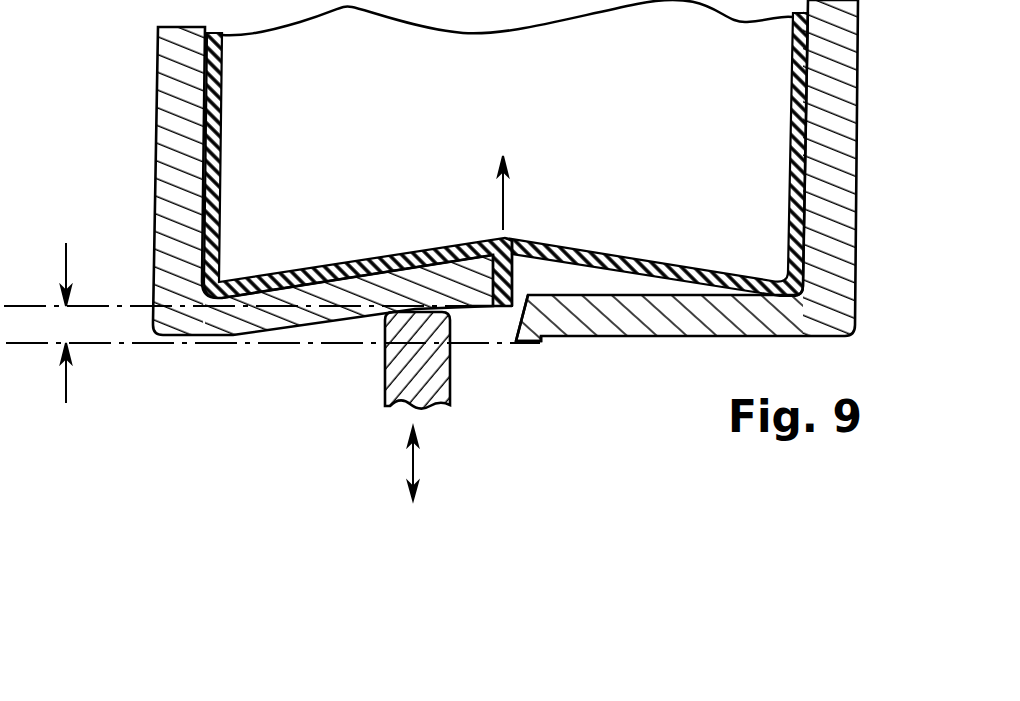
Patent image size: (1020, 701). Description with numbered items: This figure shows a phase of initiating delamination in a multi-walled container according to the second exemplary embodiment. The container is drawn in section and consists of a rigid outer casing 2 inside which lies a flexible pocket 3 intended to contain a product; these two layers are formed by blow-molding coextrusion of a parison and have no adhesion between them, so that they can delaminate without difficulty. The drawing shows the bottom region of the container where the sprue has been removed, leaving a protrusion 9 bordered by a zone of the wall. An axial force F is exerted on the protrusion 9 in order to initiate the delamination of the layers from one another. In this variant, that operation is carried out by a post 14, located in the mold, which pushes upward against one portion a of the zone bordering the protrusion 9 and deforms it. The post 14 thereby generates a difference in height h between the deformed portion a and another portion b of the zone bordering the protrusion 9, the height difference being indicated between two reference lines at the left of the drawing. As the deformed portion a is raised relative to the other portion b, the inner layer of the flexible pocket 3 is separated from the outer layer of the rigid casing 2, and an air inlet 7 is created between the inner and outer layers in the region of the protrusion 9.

The rigid outer casing 2 is at (836, 146).
The flexible pocket 3 is at (800, 138).
The air inlet 7 is at (519, 302).
The protrusion 9 is at (483, 306).
The post 14 is at (403, 374).
The portion of the zone bordering the protrusion a is at (452, 277).
The other portion of the zone bordering the protrusion b is at (628, 316).
The axial force F is at (503, 175).
The difference in height h is at (78, 323).